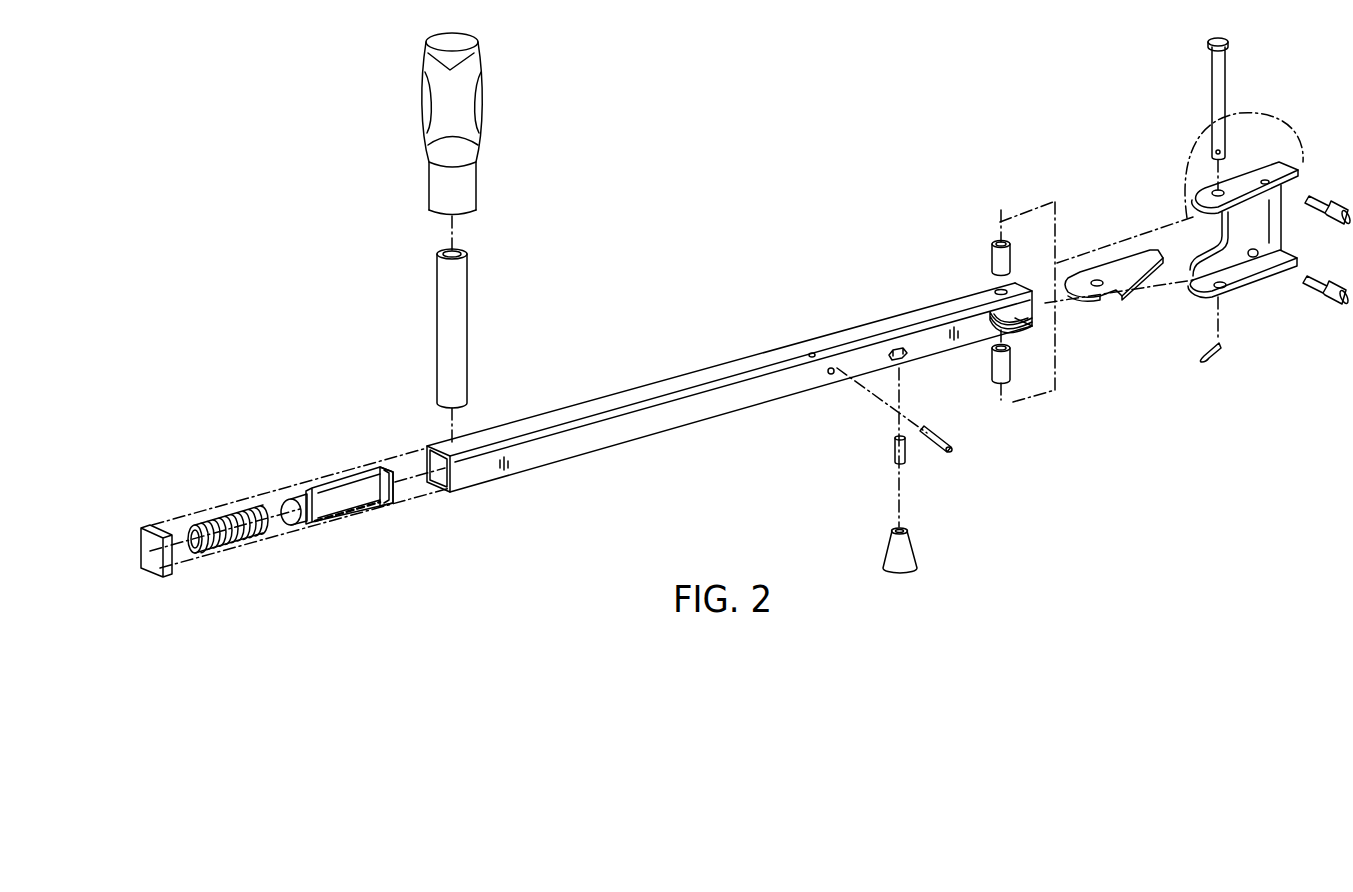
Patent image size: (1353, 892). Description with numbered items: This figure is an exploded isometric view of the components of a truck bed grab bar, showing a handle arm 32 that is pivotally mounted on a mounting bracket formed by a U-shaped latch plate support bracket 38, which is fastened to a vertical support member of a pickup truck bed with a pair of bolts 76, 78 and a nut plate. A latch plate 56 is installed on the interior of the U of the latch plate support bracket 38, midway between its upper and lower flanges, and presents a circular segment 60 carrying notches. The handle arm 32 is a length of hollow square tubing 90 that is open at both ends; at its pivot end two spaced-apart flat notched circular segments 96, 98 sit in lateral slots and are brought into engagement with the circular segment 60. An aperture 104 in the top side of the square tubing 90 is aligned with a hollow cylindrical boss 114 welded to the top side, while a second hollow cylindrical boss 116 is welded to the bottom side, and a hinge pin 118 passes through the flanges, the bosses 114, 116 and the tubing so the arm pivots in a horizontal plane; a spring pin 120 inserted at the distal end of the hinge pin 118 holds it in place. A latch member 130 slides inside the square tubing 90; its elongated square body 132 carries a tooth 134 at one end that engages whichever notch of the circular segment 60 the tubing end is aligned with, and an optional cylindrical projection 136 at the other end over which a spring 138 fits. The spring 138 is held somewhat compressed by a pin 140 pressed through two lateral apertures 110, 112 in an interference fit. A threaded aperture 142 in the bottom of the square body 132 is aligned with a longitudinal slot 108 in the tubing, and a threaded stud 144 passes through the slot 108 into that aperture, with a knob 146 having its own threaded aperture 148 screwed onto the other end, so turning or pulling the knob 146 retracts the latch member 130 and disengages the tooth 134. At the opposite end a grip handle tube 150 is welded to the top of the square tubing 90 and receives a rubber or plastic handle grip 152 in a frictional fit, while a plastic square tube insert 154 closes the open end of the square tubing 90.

The handle arm 32 is at (729, 397).
The latch plate support bracket 38 is at (1268, 302).
The latch plate 56 is at (1143, 292).
The circular segment 60 is at (1086, 298).
The bolt 76 is at (1320, 204).
The bolt 78 is at (1313, 292).
The square tubing 90 is at (593, 443).
The notched circular segment 96 is at (1013, 316).
The notched circular segment 98 is at (1018, 325).
The aperture 104 is at (999, 291).
The longitudinal slot 108 is at (898, 348).
The aperture 110 is at (812, 350).
The aperture 112 is at (830, 373).
The hollow cylindrical boss 114 is at (996, 256).
The hollow cylindrical boss 116 is at (1005, 372).
The hinge pin 118 is at (1226, 100).
The spring pin 120 is at (1205, 358).
The latch member 130 is at (341, 514).
The square body 132 is at (347, 480).
The tooth 134 is at (396, 490).
The cylindrical projection 136 is at (287, 505).
The spring 138 is at (228, 545).
The pin 140 is at (937, 445).
The threaded aperture 142 is at (312, 512).
The threaded stud 144 is at (906, 450).
The knob 146 is at (912, 548).
The threaded aperture 148 is at (901, 527).
The grip handle tube 150 is at (461, 403).
The handle grip 152 is at (471, 188).
The plastic square tube insert 154 is at (146, 527).